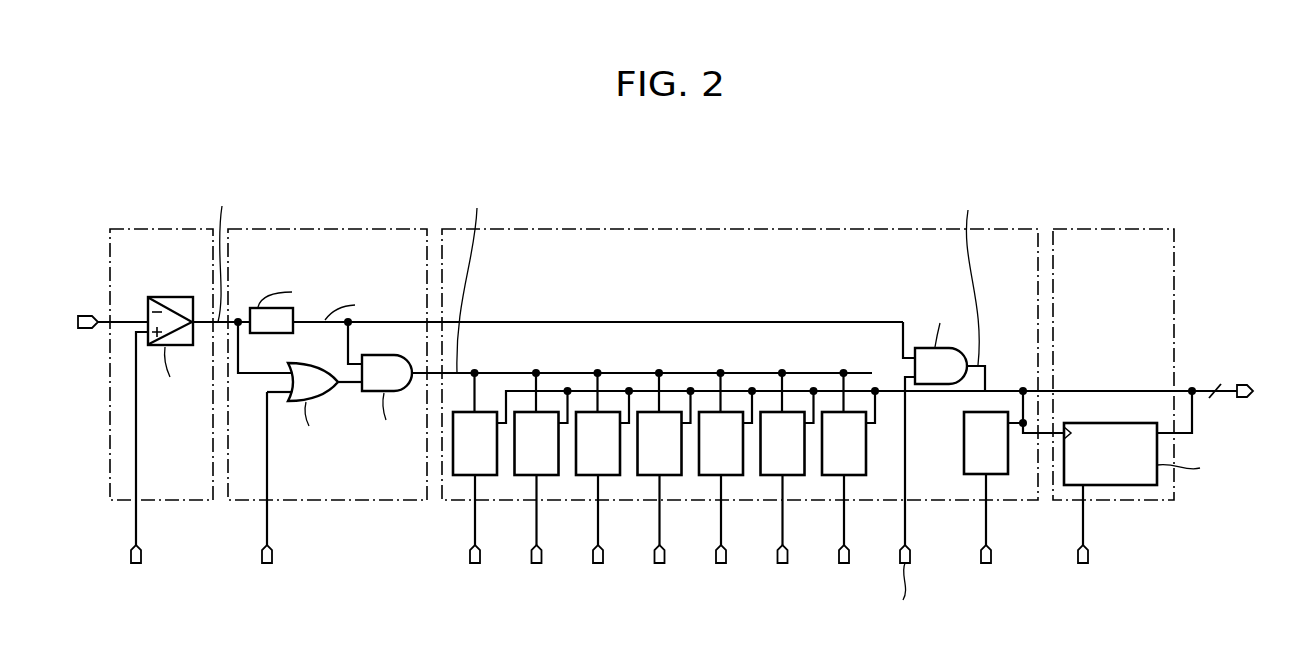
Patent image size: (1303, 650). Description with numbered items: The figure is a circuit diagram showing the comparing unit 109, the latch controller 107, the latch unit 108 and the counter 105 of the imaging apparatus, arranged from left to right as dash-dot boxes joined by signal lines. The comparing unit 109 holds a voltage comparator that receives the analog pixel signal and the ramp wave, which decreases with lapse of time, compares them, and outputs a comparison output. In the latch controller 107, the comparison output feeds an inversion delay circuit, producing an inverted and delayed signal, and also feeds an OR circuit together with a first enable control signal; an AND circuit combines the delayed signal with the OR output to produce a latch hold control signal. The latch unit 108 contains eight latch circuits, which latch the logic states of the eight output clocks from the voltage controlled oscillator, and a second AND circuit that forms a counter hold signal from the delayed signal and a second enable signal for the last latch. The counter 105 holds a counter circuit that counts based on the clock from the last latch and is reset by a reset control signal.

The comparing unit 109 is at (160, 227).
The latch controller 107 is at (332, 227).
The latch unit 108 is at (738, 227).
The counter 105 is at (1113, 227).